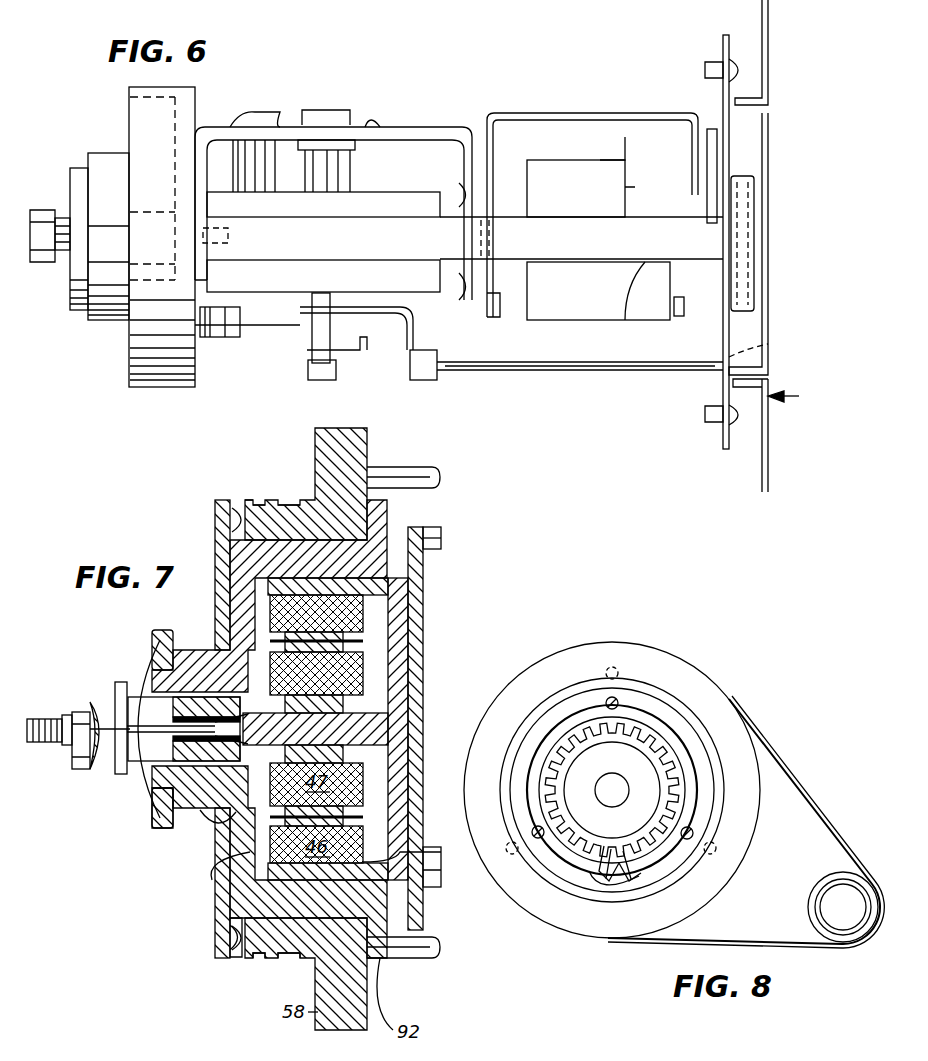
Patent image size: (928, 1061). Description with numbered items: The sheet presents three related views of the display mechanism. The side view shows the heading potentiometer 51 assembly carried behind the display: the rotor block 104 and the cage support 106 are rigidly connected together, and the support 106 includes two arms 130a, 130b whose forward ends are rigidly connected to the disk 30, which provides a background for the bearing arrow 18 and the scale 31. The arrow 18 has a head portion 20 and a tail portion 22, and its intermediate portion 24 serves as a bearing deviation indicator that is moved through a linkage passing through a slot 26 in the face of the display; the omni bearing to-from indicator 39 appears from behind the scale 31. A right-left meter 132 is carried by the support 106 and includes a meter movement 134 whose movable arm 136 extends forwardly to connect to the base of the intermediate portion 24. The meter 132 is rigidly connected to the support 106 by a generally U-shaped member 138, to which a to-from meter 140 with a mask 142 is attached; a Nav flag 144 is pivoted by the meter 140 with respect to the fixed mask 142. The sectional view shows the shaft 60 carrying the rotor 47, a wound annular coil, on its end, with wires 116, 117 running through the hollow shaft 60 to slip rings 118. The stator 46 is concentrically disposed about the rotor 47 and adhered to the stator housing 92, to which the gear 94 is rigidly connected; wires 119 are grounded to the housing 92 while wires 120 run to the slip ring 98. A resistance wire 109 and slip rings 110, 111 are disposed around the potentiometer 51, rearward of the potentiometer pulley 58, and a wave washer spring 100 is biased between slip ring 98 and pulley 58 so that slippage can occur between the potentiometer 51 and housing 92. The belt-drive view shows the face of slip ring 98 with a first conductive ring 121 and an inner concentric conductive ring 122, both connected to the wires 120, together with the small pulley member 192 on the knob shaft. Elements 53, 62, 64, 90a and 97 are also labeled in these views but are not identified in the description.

In FIG. 6, the bearing arrow 18 is at (795, 402).
In FIG. 6, the head portion 20 is at (768, 36).
In FIG. 6, the tail portion 22 is at (768, 447).
In FIG. 6, the intermediate portion 24 is at (770, 250).
In FIG. 6, the slot 26 is at (766, 346).
In FIG. 6, the disk 30 is at (726, 35).
In FIG. 6, the scale 31 is at (748, 193).
In FIG. 6, the omni bearing to-from indicator 39 is at (750, 288).
In FIG. 7, the resolver stator 46 is at (330, 624).
In FIG. 6, the rotor 47 is at (108, 160).
In FIG. 7, the rotor 47 is at (330, 684).
In FIG. 7, the heading potentiometer 51 is at (287, 973).
In FIG. 8, the drive belt 53 is at (785, 756).
In FIG. 7, the potentiometer pulley 58 is at (362, 448).
In FIG. 8, the potentiometer pulley 58 is at (695, 672).
In FIG. 6, the shaft 60 is at (45, 218).
In FIG. 7, the shaft 60 is at (170, 720).
In FIG. 7, the shaft 62 is at (152, 792).
In FIG. 7, the washer 64 is at (120, 682).
In FIG. 7, the lead 90a is at (441, 949).
In FIG. 7, the stator housing 92 is at (385, 508).
In FIG. 7, the gear 94 is at (163, 630).
In FIG. 8, the gear 94 is at (552, 758).
In FIG. 7, the lead 97 is at (425, 468).
In FIG. 7, the slip ring 98 is at (222, 936).
In FIG. 8, the slip ring 98 is at (720, 767).
In FIG. 7, the wave washer spring 100 is at (237, 960).
In FIG. 6, the rotor block 104 is at (132, 94).
In FIG. 7, the rotor block 104 is at (402, 642).
In FIG. 7, the cage support 106 is at (420, 612).
In FIG. 7, the potentiometer resistance wire 109 is at (272, 500).
In FIG. 7, the slip ring 110 is at (246, 500).
In FIG. 7, the slip ring 111 is at (295, 500).
In FIG. 7, the wire 116 is at (230, 657).
In FIG. 7, the wire 117 is at (160, 826).
In FIG. 7, the slip rings 118 is at (42, 744).
In FIG. 7, the wires 119 is at (218, 814).
In FIG. 7, the wires 120 is at (212, 880).
In FIG. 8, the wires 120 is at (598, 867).
In FIG. 8, the first conductive ring 121 is at (670, 873).
In FIG. 8, the inner concentric conductive ring 122 is at (668, 743).
In FIG. 7, the arm 130a is at (441, 536).
In FIG. 6, the arm 130b is at (598, 249).
In FIG. 7, the arm 130b is at (435, 873).
In FIG. 6, the right-left meter 132 is at (330, 287).
In FIG. 6, the meter movement 134 is at (310, 333).
In FIG. 6, the movable arm 136 is at (592, 362).
In FIG. 6, the U-shaped member 138 is at (222, 130).
In FIG. 6, the to-from meter 140 is at (588, 204).
In FIG. 6, the mask 142 is at (573, 112).
In FIG. 6, the Nav flag 144 is at (709, 128).
In FIG. 8, the small pulley member 192 is at (838, 912).